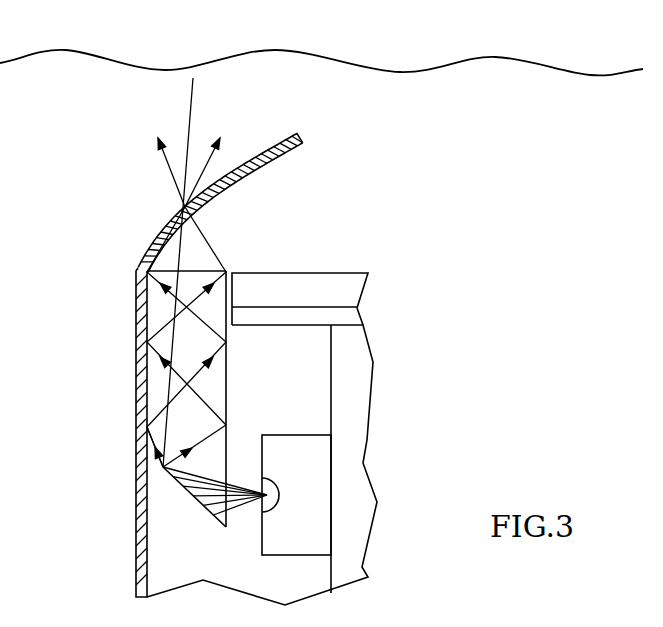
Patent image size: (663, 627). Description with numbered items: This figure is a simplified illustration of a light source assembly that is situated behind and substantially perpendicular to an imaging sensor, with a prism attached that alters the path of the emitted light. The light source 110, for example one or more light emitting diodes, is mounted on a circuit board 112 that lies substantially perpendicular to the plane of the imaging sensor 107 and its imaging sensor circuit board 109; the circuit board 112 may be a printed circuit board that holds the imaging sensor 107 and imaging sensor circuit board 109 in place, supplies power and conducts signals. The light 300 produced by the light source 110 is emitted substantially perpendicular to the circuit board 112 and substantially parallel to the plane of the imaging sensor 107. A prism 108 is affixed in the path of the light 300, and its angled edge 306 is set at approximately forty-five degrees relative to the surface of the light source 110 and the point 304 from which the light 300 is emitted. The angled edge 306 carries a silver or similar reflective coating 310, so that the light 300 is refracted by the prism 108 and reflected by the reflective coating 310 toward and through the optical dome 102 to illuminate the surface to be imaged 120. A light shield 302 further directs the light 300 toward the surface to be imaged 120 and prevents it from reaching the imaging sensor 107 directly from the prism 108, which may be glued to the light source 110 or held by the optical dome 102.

The surface to be imaged 120 is at (467, 55).
The optical dome 102 is at (158, 240).
The light shield 302 is at (234, 292).
The prism 108 is at (228, 363).
The imaging sensor 107 is at (337, 288).
The imaging sensor circuit board 109 is at (348, 316).
The circuit board 112 is at (347, 397).
The angled edge 306 is at (140, 465).
The point 304 is at (163, 467).
The reflective coating 310 is at (200, 488).
The light 300 is at (256, 505).
The light source 110 is at (262, 537).